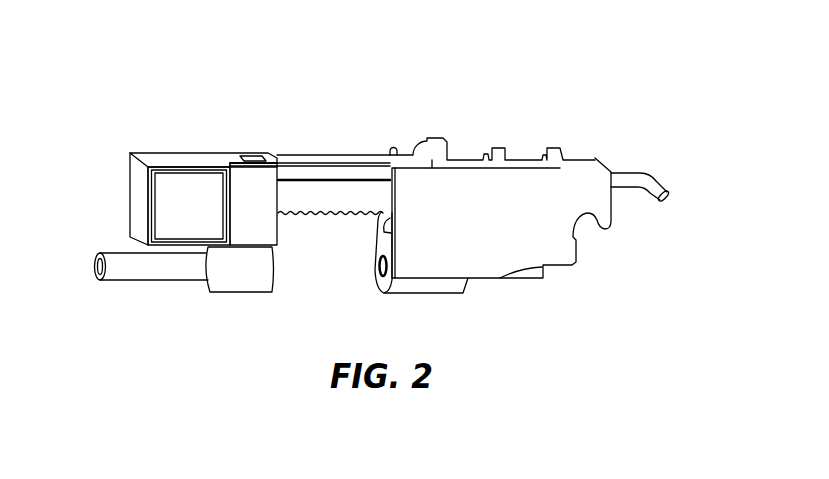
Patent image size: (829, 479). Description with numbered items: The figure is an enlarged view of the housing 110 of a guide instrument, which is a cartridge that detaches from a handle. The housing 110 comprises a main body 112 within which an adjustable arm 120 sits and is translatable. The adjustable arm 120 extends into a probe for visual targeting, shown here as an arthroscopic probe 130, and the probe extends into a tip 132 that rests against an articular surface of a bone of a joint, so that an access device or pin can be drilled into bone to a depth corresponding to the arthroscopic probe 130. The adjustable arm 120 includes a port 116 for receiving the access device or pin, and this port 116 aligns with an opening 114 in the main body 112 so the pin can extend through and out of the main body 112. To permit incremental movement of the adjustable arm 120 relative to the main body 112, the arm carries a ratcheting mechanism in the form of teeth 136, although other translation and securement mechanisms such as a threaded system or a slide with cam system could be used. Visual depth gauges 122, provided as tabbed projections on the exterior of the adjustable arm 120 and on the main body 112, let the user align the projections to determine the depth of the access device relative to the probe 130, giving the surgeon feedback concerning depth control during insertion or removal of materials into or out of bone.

The housing 110 is at (534, 300).
The main body 112 is at (502, 235).
The opening 114 is at (380, 283).
The port 116 is at (150, 268).
The adjustable arm 120 is at (173, 155).
The visual depth gauges 122 is at (395, 147).
The arthroscopic probe 130 is at (633, 173).
The tip 132 is at (668, 197).
The teeth 136 is at (345, 216).